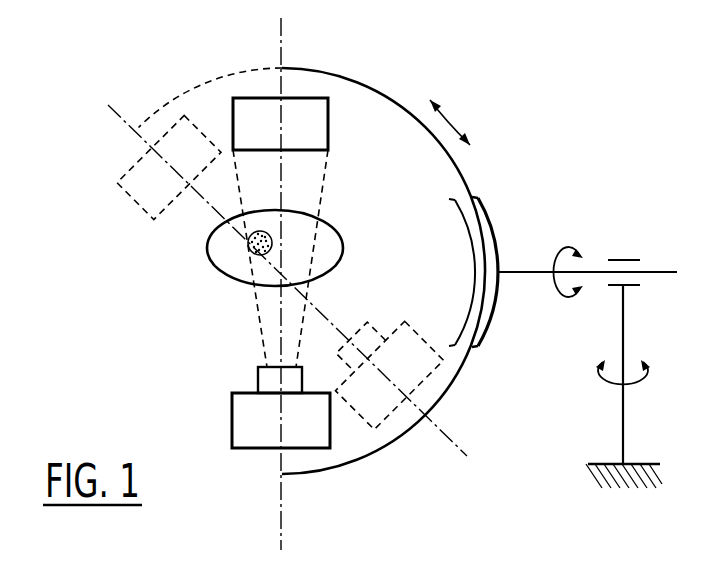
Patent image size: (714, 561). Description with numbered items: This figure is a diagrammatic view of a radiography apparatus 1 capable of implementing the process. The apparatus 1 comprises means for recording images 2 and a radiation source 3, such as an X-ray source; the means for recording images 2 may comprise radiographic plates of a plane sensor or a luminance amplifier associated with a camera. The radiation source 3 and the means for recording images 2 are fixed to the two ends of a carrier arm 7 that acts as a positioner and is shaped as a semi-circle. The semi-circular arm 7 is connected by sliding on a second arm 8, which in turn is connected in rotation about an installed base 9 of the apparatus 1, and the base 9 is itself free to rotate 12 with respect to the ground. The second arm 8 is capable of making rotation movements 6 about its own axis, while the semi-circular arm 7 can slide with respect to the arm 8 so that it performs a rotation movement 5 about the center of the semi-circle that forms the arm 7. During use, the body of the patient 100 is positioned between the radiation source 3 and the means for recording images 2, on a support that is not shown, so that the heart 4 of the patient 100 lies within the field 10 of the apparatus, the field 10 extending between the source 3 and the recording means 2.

The radiography apparatus 1 is at (553, 110).
The means for recording images 2 is at (318, 118).
The radiation source 3 is at (250, 420).
The heart 4 is at (273, 244).
The rotation movement 5 is at (452, 124).
The rotation movements 6 is at (556, 248).
The carrier arm 7 is at (458, 379).
The second arm 8 is at (598, 272).
The base 9 is at (625, 320).
The field 10 is at (326, 187).
The rotation 12 is at (643, 382).
The patient 100 is at (334, 226).